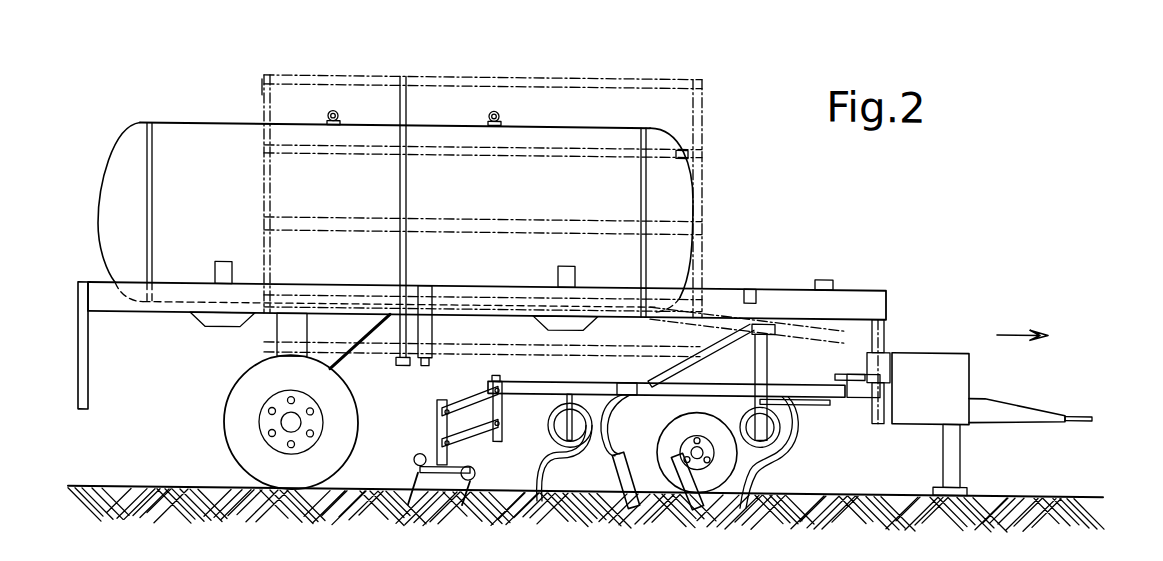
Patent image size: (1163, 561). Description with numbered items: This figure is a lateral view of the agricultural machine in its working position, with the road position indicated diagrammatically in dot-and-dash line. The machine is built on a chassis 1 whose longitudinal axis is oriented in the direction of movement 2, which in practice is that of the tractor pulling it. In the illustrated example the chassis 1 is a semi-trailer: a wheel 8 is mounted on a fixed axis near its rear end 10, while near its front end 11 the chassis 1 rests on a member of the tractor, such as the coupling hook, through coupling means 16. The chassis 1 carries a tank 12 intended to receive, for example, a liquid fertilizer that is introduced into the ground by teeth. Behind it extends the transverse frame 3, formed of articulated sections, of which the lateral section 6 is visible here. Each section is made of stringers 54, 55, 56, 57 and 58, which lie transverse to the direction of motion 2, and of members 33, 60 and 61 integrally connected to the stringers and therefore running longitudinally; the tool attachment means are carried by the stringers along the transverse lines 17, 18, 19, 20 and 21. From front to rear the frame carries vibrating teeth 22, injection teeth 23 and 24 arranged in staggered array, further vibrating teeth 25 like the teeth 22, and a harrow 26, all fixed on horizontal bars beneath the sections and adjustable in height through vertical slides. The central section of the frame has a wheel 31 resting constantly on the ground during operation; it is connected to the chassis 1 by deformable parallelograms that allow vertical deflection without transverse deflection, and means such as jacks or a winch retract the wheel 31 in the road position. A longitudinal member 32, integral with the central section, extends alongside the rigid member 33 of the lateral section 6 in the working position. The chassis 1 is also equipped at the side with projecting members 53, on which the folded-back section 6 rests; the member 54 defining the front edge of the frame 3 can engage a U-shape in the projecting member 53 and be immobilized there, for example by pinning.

The chassis 1 is at (168, 300).
The direction of movement 2 is at (1012, 320).
The transverse frame 3 is at (768, 398).
The lateral section 6 is at (680, 103).
The wheel 8 is at (235, 452).
The rear end 10 is at (95, 260).
The front end 11 is at (886, 277).
The tank 12 is at (168, 135).
The coupling means 16 is at (1065, 400).
The transverse line 17 is at (768, 366).
The transverse line 18 is at (718, 385).
The transverse line 19 is at (625, 376).
The transverse line 20 is at (570, 375).
The transverse line 21 is at (490, 376).
The vibrating teeth 22 is at (745, 475).
The injection teeth 23 is at (629, 467).
The injection teeth 24 is at (612, 470).
The vibrating teeth 25 is at (543, 470).
The harrow 26 is at (418, 466).
The wheel 31 is at (700, 505).
The longitudinal member 32 is at (762, 425).
The rigid member 33 is at (705, 117).
The projecting member 53 is at (424, 361).
The stringer 54 is at (370, 345).
The stringer 55 is at (330, 290).
The stringer 56 is at (346, 222).
The stringer 57 is at (466, 150).
The stringer 58 is at (458, 72).
The transverse member 60 is at (408, 103).
The transverse member 61 is at (262, 92).